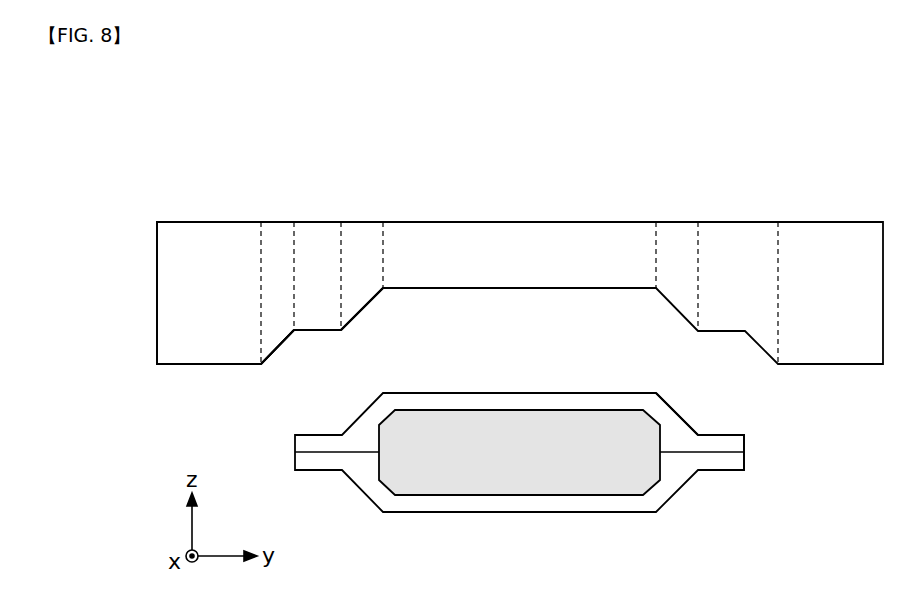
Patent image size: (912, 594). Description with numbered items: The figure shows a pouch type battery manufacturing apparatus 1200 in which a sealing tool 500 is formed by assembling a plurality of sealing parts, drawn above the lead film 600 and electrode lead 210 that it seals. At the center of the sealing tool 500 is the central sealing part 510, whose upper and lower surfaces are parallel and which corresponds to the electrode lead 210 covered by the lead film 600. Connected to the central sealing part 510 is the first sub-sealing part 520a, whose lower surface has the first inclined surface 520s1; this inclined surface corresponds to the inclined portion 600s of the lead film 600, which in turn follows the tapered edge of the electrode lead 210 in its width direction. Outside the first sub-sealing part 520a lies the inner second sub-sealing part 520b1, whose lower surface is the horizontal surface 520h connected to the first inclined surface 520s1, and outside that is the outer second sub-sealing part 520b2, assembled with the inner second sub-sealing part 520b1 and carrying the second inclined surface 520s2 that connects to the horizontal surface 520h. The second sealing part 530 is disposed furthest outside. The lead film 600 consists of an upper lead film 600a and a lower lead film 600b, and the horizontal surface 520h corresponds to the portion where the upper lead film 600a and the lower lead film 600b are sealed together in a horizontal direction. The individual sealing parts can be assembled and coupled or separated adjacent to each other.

The pouch type battery manufacturing apparatus 1200 is at (552, 99).
The sealing tool 500 is at (447, 154).
The second sealing part 530 is at (202, 245).
The 1-2-2 sealing part 520b2 is at (277, 245).
The 1-2-1 sealing part 520b1 is at (320, 245).
The 1-1 sealing part 520a is at (368, 245).
The central sealing part 510 is at (428, 245).
The first inclined surface 520s1 is at (363, 310).
The horizontal surface 520h is at (320, 331).
The second inclined surface 520s2 is at (277, 350).
The lead film 600 is at (831, 425).
The upper lead film 600a is at (733, 442).
The lower lead film 600b is at (733, 461).
The inclined portion 600s is at (679, 413).
The electrode lead 210 is at (513, 467).